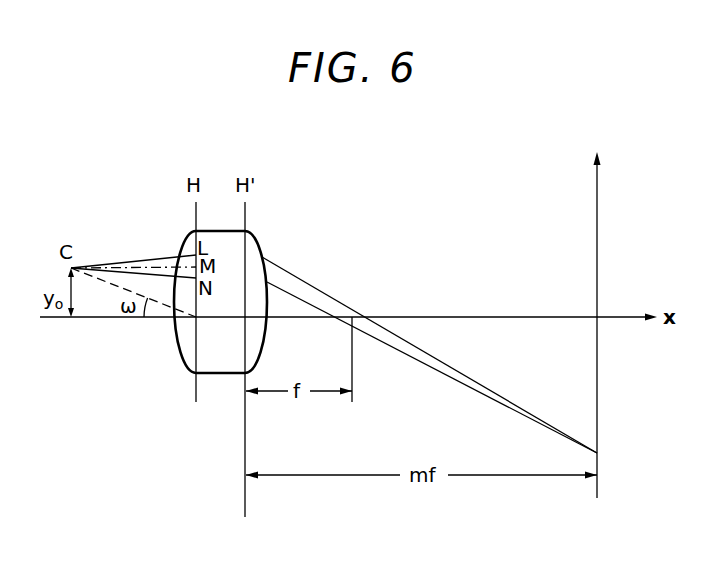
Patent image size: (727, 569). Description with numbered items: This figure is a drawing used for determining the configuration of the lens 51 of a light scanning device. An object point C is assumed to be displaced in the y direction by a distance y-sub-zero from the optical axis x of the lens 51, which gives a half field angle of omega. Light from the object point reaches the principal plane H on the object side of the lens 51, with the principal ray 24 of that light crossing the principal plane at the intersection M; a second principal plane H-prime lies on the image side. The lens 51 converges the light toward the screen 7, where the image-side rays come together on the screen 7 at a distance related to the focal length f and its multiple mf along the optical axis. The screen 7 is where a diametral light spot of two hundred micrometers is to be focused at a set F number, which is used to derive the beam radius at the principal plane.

The principal ray 24 is at (103, 262).
The lens 51 is at (181, 346).
The screen 7 is at (597, 408).